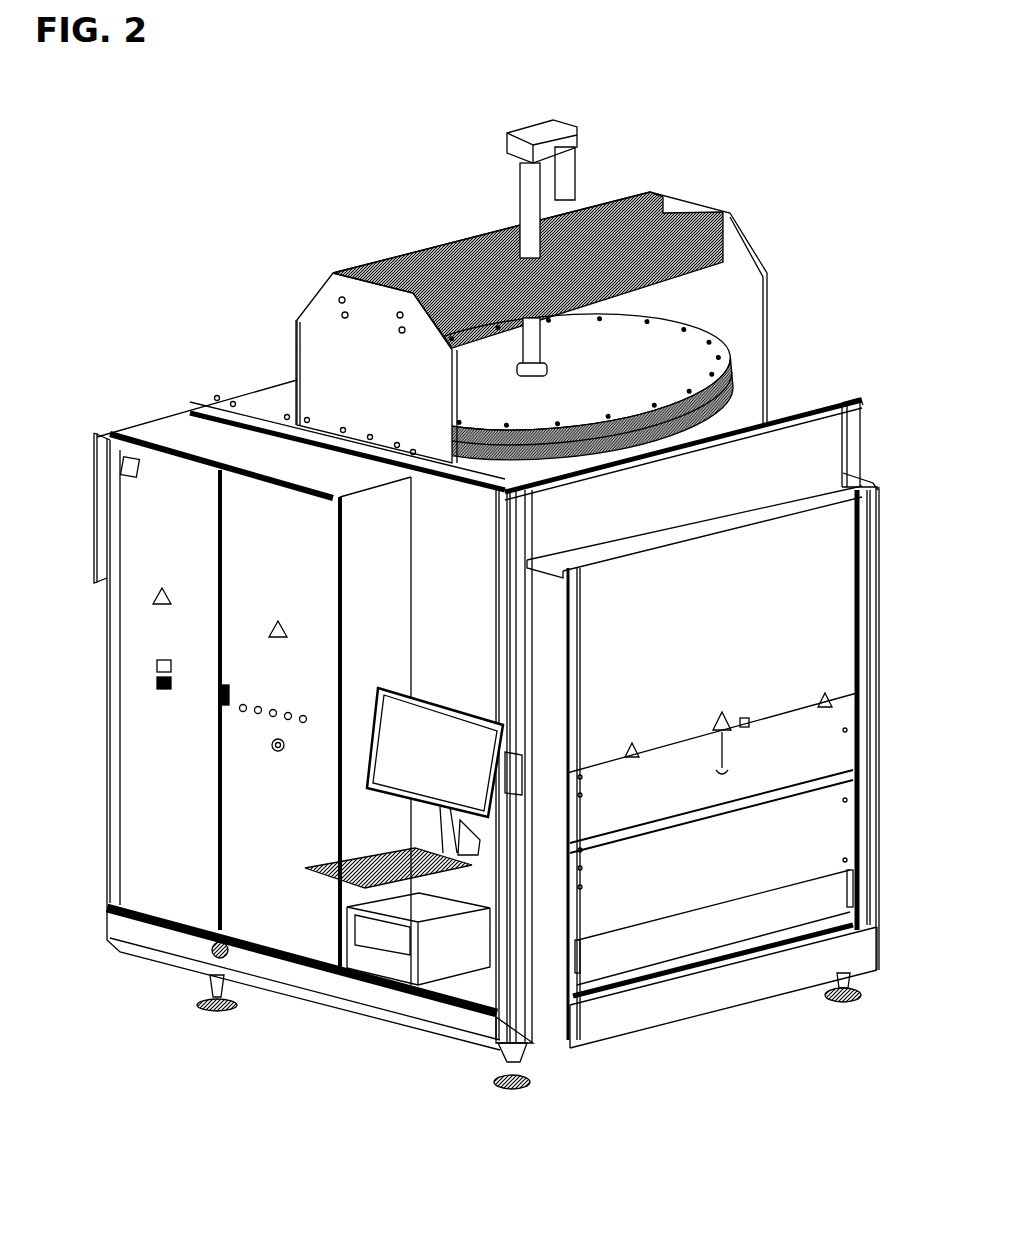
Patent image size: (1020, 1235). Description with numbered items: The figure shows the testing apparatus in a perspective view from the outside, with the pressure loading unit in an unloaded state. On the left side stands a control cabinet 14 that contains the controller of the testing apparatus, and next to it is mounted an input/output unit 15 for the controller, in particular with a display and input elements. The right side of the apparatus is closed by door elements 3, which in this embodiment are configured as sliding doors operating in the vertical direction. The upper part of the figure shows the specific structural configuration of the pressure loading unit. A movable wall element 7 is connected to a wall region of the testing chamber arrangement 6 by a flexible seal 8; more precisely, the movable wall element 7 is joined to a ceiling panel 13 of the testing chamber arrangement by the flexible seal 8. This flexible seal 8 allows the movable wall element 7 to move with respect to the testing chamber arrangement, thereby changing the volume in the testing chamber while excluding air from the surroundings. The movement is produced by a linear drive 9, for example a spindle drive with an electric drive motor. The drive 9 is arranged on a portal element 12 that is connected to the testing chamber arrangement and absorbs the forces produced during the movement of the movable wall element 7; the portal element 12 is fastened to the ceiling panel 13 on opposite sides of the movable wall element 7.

The door elements 3 is at (780, 610).
The testing chamber arrangement 6 is at (798, 396).
The movable wall element 7 is at (553, 372).
The flexible seal 8 is at (737, 425).
The linear drive 9 is at (527, 207).
The portal element 12 is at (755, 272).
The ceiling panel 13 is at (263, 407).
The control cabinet 14 is at (138, 818).
The input/output unit 15 is at (413, 836).